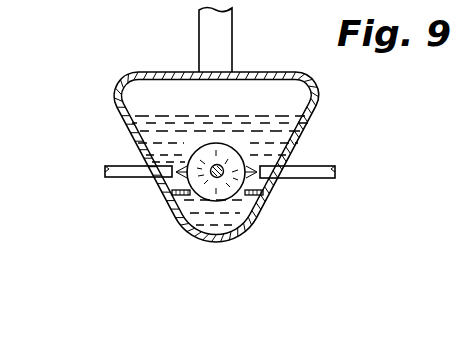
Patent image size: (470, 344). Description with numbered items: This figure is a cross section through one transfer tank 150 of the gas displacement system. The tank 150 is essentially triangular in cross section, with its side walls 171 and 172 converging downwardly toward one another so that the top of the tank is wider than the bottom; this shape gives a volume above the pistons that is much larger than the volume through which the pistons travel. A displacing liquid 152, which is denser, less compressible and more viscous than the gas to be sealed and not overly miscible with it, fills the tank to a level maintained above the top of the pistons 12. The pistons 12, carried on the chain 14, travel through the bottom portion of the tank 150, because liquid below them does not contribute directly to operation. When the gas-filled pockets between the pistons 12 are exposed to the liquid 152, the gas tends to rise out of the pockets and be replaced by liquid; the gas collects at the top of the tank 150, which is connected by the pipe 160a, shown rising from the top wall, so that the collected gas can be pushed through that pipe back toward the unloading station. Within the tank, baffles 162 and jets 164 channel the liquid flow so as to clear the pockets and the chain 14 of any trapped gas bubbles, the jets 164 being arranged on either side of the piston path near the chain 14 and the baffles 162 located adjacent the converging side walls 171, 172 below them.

The transfer tank 150 is at (251, 234).
The displacing liquid 152 is at (290, 98).
The side wall 171 is at (116, 107).
The side wall 172 is at (317, 106).
The pipe 160a is at (226, 31).
The piston 12 is at (238, 147).
The chain 14 is at (214, 177).
The jet 164 is at (121, 166).
The baffle 162 is at (184, 197).